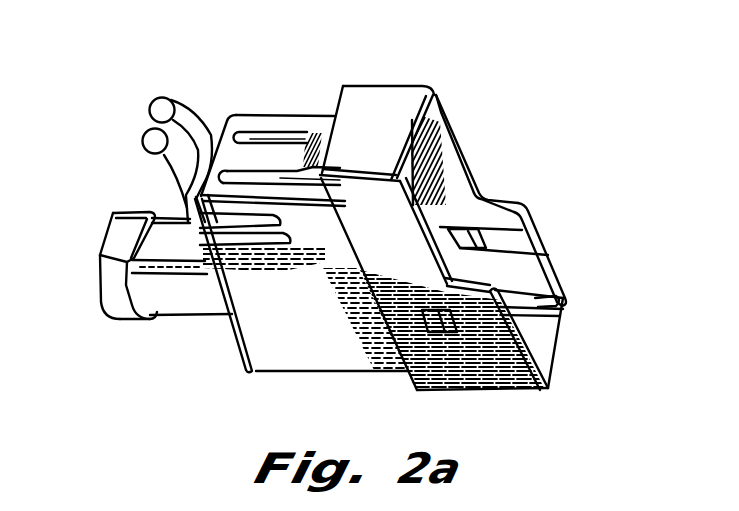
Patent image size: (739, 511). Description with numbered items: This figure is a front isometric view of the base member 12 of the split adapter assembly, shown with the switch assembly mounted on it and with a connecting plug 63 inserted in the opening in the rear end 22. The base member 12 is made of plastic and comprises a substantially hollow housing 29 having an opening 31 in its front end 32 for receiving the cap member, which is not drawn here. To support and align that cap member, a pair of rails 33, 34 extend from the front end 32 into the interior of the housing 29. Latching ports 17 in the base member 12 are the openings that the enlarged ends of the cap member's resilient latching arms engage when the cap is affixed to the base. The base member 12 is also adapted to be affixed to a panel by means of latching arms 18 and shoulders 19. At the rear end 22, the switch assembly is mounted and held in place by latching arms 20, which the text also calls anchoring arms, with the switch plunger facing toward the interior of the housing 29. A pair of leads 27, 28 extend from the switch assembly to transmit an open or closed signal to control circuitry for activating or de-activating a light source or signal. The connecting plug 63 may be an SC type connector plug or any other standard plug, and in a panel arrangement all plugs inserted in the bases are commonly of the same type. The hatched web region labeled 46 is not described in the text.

The base member 12 is at (293, 360).
The latching ports 17 is at (450, 323).
The latching arms 18 is at (263, 157).
The shoulders 19 is at (338, 99).
The latching arms 20 is at (257, 222).
The rear end 22 is at (226, 328).
The lead 27 is at (142, 145).
The lead 28 is at (172, 98).
The hollow housing 29 is at (465, 156).
The opening 31 is at (434, 137).
The front end 32 is at (530, 213).
The rail 33 is at (549, 275).
The rail 34 is at (538, 358).
The hinge web 46 is at (440, 140).
The connecting plug 63 is at (186, 302).